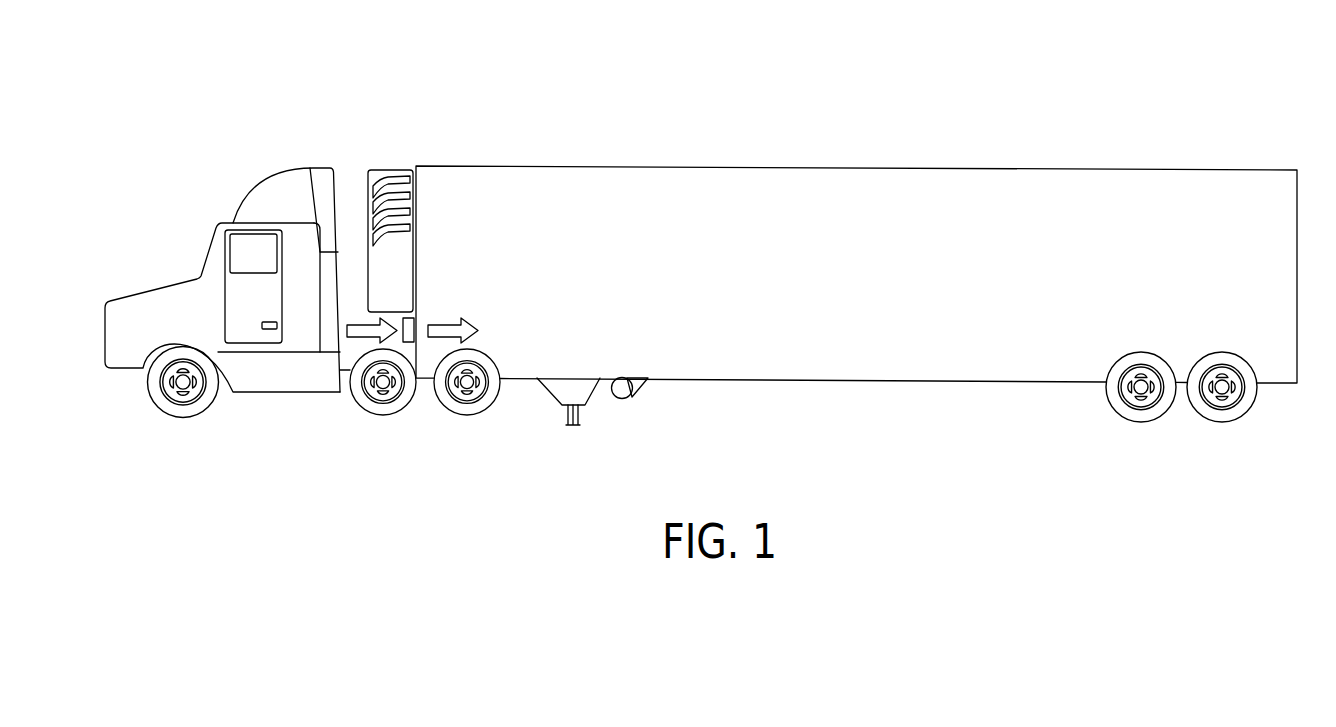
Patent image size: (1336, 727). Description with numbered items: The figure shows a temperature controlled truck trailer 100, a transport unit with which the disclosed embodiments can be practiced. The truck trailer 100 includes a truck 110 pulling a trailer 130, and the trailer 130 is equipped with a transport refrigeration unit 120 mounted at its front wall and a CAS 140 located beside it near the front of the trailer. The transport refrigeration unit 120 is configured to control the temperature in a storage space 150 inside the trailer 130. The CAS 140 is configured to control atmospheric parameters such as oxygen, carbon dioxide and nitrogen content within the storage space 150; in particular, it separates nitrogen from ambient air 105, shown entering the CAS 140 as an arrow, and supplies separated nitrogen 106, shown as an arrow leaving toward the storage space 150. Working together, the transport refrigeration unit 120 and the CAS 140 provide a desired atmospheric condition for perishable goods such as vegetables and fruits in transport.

The temperature controlled truck trailer 100 is at (761, 99).
The ambient air 105 is at (365, 343).
The separated nitrogen 106 is at (445, 318).
The truck 110 is at (262, 183).
The transport refrigeration unit 120 is at (388, 170).
The trailer 130 is at (1043, 168).
The CAS 140 is at (408, 343).
The storage space 150 is at (775, 220).